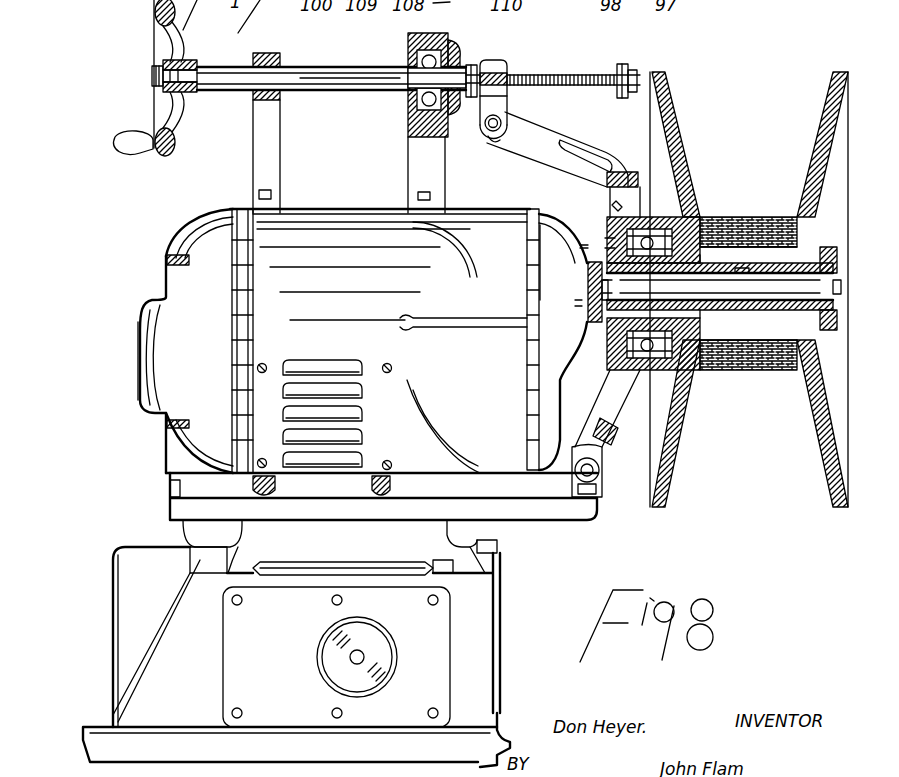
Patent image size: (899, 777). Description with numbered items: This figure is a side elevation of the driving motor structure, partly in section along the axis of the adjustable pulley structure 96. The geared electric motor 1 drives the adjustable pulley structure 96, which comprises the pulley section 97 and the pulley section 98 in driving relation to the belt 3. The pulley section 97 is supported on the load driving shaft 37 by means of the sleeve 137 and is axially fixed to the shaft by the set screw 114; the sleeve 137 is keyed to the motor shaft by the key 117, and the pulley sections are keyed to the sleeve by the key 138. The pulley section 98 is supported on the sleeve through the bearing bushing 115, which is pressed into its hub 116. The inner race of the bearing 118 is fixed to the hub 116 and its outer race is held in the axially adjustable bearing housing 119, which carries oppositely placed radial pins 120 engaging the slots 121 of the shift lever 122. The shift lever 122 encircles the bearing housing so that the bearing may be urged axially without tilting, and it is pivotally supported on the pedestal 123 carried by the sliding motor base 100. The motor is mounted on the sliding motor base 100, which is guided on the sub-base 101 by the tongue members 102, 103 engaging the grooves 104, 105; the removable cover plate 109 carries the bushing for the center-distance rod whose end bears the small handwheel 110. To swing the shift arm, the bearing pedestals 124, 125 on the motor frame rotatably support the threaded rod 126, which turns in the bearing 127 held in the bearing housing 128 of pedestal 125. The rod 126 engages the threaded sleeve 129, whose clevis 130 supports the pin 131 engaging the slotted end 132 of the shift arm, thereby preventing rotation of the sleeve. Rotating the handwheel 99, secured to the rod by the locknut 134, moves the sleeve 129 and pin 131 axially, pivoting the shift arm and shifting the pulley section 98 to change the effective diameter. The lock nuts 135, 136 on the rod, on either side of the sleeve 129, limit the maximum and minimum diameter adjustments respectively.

The geared electric motor 1 is at (192, 224).
The belt 3 is at (742, 216).
The load driving shaft 37 is at (597, 270).
The adjustable pulley structure 96 is at (745, 484).
The pulley section 97 is at (820, 455).
The pulley section 98 is at (660, 505).
The handwheel 99 is at (152, 10).
The sliding motor base 100 is at (480, 525).
The sub-base 101 is at (500, 648).
The tongue member 102 is at (246, 560).
The tongue member 103 is at (433, 567).
The groove 104 is at (220, 573).
The groove 105 is at (450, 573).
The removable cover plate 109 is at (450, 688).
The small handwheel 110 is at (392, 648).
The set screw 114 is at (745, 270).
The bearing bushing 115 is at (700, 268).
The hub 116 is at (683, 237).
The key 117 is at (753, 303).
The bearing 118 is at (667, 367).
The bearing housing 119 is at (628, 228).
The pins 120 is at (597, 343).
The slots 121 is at (588, 282).
The shift lever 122 is at (572, 152).
The pedestal 123 is at (570, 490).
The bearing pedestal 124 is at (262, 53).
The bearing pedestal 125 is at (407, 130).
The threaded rod 126 is at (284, 92).
The bearing 127 is at (406, 42).
The bearing housing 128 is at (466, 63).
The threaded sleeve 129 is at (512, 74).
The clevis 130 is at (508, 106).
The pin 131 is at (486, 131).
The slotted end 132 is at (497, 140).
The locknut 134 is at (150, 67).
The lock nuts 135 is at (621, 64).
The lock nuts 136 is at (498, 72).
The sleeve 137 is at (835, 273).
The key 138 is at (835, 318).